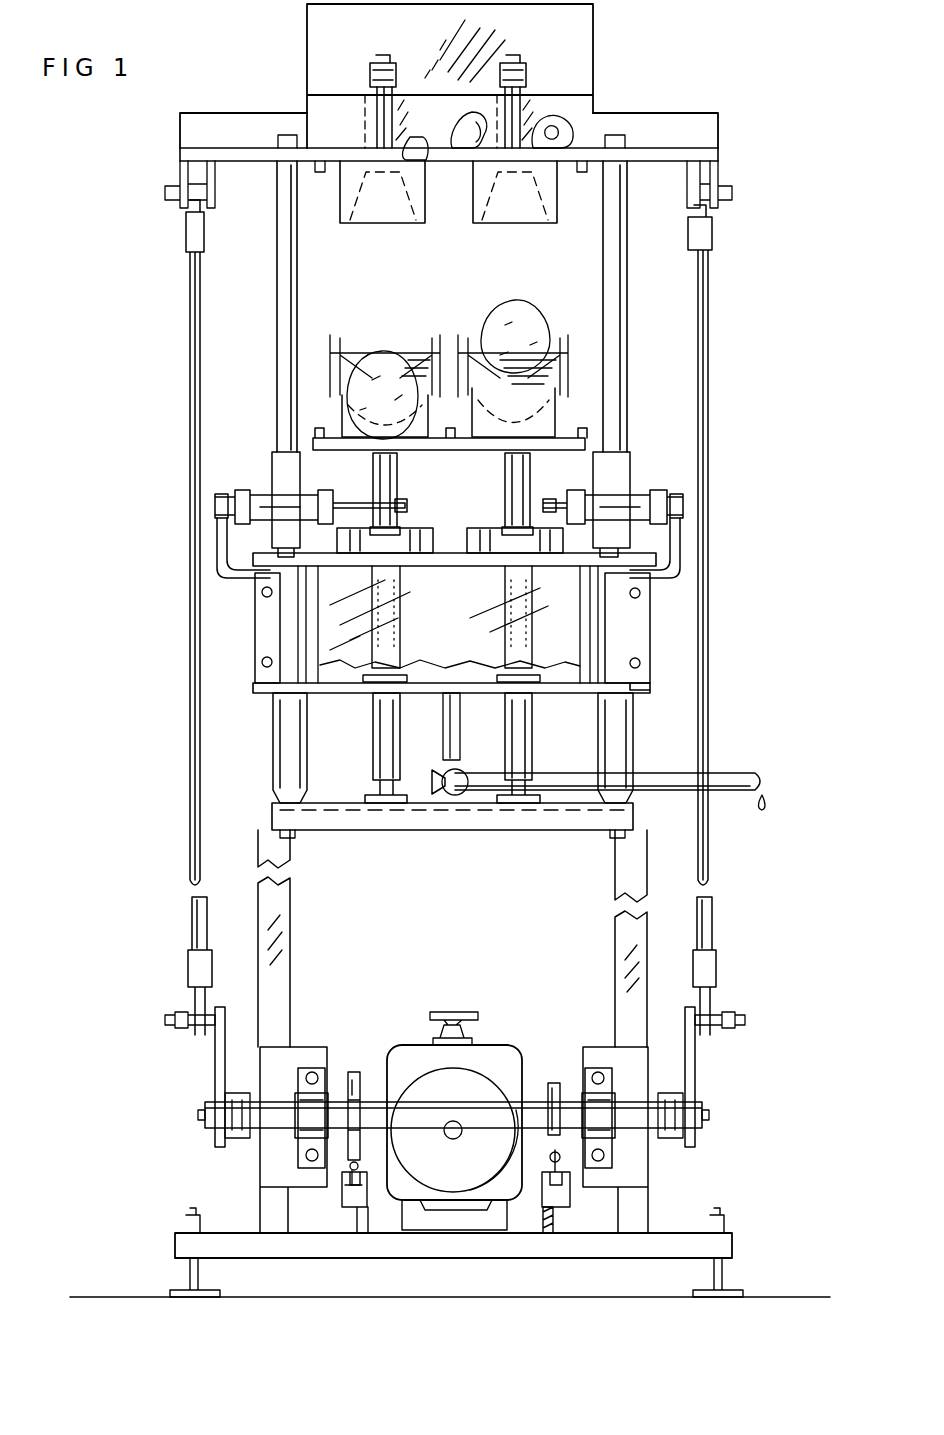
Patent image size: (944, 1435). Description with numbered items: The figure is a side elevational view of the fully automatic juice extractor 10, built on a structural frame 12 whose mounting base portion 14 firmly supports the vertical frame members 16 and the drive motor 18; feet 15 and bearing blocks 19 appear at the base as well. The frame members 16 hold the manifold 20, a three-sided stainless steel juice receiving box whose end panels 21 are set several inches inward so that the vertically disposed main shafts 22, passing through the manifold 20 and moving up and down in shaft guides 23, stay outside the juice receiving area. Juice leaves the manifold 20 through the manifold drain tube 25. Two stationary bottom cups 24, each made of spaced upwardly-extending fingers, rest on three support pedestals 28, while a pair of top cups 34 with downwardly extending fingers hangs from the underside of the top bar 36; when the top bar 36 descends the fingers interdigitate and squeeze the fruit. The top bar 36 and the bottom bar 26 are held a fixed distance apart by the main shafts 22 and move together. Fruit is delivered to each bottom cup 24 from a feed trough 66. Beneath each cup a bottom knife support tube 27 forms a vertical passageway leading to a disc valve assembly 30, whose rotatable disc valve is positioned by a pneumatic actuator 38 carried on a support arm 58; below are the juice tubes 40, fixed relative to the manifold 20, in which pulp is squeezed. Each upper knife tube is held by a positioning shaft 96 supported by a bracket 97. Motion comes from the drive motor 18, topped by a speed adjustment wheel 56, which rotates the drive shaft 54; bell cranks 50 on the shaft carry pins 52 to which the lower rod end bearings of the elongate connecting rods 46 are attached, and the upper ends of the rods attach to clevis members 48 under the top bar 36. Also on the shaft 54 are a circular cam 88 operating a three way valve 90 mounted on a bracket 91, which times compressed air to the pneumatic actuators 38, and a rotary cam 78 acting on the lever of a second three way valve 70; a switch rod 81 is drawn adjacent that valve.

The juice extractor 10 is at (792, 122).
The structural frame 12 is at (280, 1210).
The mounting base portion 14 is at (722, 1243).
The leveling feet 15 is at (188, 1273).
The vertical frame members 16 is at (268, 856).
The drive motor 18 is at (457, 1180).
The pillow block bearing 19 is at (310, 1075).
The manifold 20 is at (652, 689).
The end panels 21 is at (298, 642).
The main shafts 22 is at (286, 276).
The shaft guides 23 is at (283, 462).
The bottom cups 24 is at (347, 416).
The manifold drain tube 25 is at (765, 790).
The bottom bar 26 is at (575, 825).
The bottom knife support tubes 27 is at (380, 486).
The support pedestals 28 is at (583, 452).
The disc valve assembly 30 is at (355, 548).
The top cups 34 is at (352, 182).
The top bar 36 is at (668, 148).
The pneumatic actuator 38 is at (253, 521).
The juice tubes 40 is at (383, 748).
The connecting rods 46 is at (196, 313).
The connecting rod clevis members 48 is at (182, 168).
The bell cranks 50 is at (213, 1067).
The pins 52 is at (172, 1019).
The drive shaft 54 is at (630, 1115).
The speed adjustment wheel 56 is at (452, 1012).
The support arm 58 is at (228, 562).
The feed trough 66 is at (337, 381).
The three way valve 70 is at (563, 1192).
The rotary cam 78 is at (553, 1083).
The switch rod 81 is at (546, 1215).
The cam 88 is at (352, 1070).
The three way valve 90 is at (345, 1190).
The bracket 91 is at (365, 1212).
The positioning shaft 96 is at (380, 112).
The bracket 97 is at (370, 75).